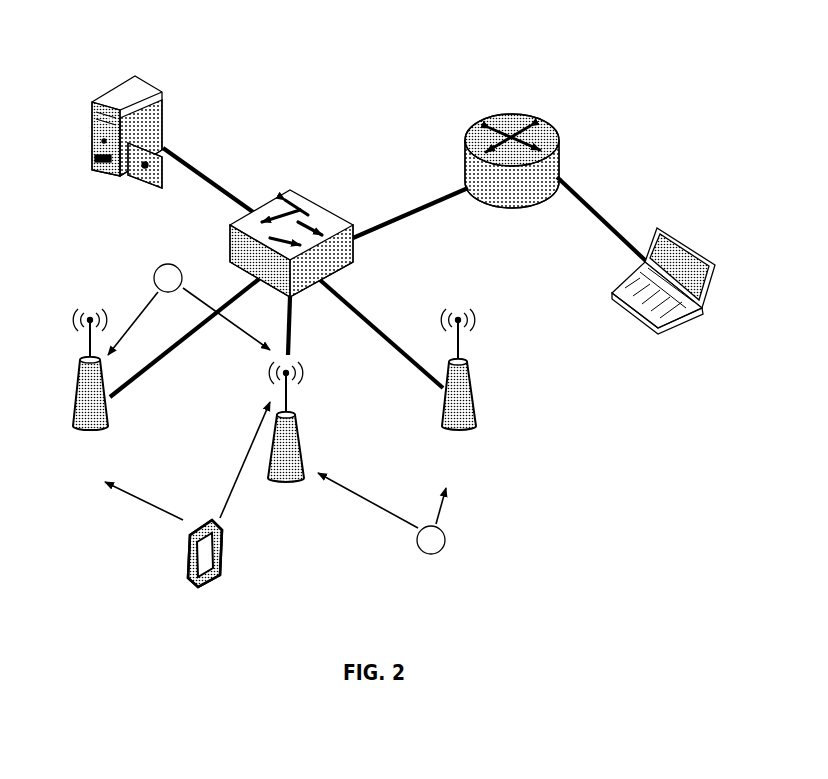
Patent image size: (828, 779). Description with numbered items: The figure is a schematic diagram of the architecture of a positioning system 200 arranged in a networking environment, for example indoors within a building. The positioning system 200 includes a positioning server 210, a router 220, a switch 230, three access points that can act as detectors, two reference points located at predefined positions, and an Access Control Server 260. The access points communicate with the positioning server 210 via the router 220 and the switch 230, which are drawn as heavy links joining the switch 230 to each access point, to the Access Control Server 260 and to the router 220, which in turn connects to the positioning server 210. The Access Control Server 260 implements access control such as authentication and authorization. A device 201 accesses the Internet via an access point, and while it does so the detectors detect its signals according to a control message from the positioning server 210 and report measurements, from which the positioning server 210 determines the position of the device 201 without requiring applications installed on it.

The positioning system 200 is at (163, 20).
The Access Control Server (ACS) 260 is at (162, 104).
The switch 230 is at (298, 194).
The router 220 is at (560, 146).
The positioning server 210 is at (688, 243).
The device 201 is at (223, 553).